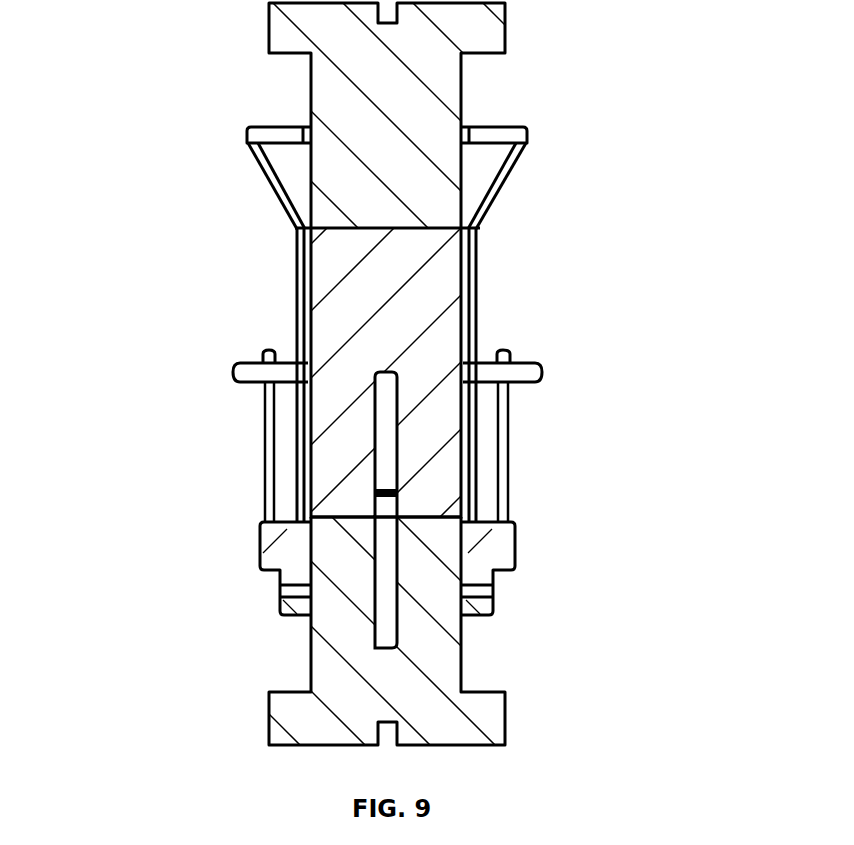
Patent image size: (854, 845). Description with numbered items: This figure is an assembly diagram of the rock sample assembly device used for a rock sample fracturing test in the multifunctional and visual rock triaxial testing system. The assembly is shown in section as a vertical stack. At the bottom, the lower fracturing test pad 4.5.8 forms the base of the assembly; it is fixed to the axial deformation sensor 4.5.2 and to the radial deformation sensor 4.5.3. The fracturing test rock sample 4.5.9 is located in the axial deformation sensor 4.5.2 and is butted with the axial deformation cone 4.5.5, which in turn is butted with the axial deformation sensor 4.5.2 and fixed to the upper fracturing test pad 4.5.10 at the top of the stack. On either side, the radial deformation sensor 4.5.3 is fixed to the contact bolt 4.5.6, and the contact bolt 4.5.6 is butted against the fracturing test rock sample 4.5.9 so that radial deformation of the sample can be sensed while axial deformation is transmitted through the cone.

The upper fracturing test pad 4.5.10 is at (444, 78).
The axial deformation cone 4.5.5 is at (282, 170).
The contact bolt 4.5.6 is at (580, 378).
The radial deformation sensor 4.5.3 is at (244, 438).
The axial deformation sensor 4.5.2 is at (285, 519).
The fracturing test rock sample 4.5.9 is at (445, 478).
The lower fracturing test pad 4.5.8 is at (408, 682).